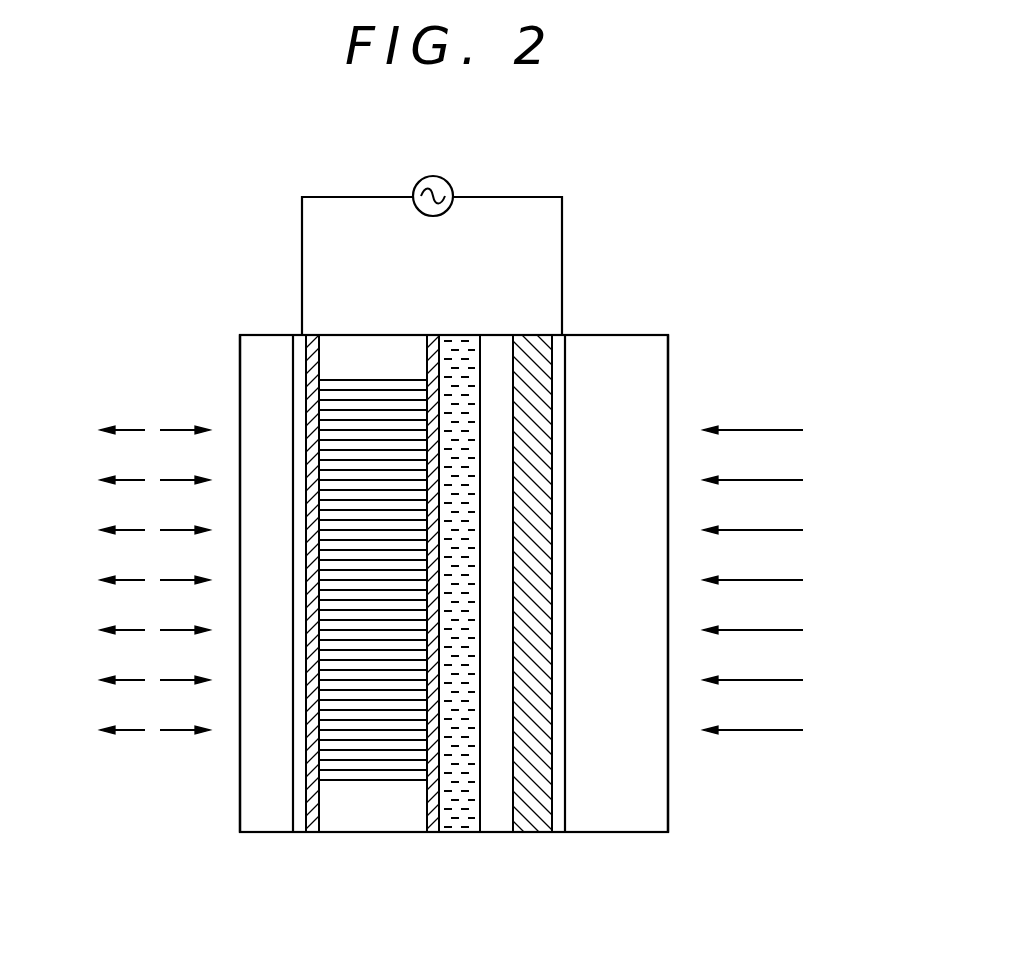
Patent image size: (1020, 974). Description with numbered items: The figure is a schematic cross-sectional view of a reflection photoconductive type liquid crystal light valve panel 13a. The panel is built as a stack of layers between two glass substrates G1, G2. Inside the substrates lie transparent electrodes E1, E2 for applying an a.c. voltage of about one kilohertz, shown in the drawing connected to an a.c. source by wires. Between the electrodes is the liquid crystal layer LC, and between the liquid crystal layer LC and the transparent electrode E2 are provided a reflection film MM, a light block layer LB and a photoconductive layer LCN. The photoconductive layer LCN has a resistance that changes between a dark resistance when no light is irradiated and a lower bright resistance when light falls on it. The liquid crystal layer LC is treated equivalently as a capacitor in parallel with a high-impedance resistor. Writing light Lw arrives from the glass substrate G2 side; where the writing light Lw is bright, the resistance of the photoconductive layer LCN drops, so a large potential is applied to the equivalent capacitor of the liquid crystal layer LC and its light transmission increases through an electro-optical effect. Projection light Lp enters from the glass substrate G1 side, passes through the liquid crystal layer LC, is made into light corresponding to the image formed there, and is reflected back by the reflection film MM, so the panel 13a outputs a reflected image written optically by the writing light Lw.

The glass substrate G1 is at (260, 832).
The transparent electrode E1 is at (293, 832).
The liquid crystal layer LC is at (372, 783).
The photoconductive layer LCN is at (540, 333).
The reflection film MM is at (452, 833).
The light block layer LB is at (493, 833).
The transparent electrode E2 is at (553, 833).
The glass substrate G2 is at (612, 833).
The reflection photoconductive type liquid crystal light valve panel 13a is at (630, 335).
The projection light Lp is at (100, 410).
The writing light Lw is at (807, 420).